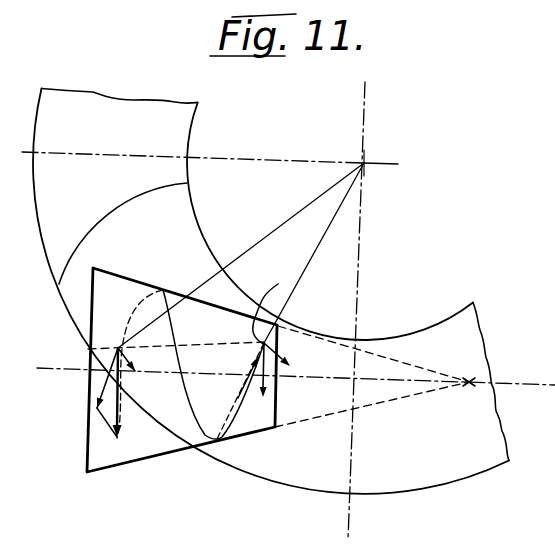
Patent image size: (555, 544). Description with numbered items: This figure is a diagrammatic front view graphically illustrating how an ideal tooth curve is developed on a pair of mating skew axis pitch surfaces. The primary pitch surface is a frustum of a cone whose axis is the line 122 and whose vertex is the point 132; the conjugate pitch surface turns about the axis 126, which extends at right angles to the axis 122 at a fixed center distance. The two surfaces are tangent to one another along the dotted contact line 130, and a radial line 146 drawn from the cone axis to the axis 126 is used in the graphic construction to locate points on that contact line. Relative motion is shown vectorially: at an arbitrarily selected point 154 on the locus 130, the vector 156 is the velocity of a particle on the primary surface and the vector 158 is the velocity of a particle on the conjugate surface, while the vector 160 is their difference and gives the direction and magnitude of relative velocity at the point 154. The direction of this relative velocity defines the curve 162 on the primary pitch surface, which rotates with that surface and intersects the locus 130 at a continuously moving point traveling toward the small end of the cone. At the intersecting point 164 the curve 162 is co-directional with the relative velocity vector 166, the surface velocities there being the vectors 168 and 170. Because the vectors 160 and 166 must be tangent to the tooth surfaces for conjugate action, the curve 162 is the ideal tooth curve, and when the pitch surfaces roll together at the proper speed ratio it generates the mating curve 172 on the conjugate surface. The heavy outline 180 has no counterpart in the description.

The axis of primary pitch surface 122 is at (43, 369).
The axis of conjugate pitch surface 126 is at (366, 166).
The contact line 130 is at (212, 348).
The vertex of the cone 132 is at (471, 380).
The radial line 146 is at (275, 229).
The point on the locus 154 is at (113, 345).
The velocity vector of primary surface 156 is at (97, 408).
The velocity vector of conjugate surface 158 is at (134, 368).
The relative velocity vector 160 is at (101, 395).
The ideal tooth curve 162 is at (178, 295).
The intersecting point 164 is at (258, 285).
The relative velocity vector 166 is at (254, 360).
The velocity vector 168 is at (266, 380).
The velocity vector 170 is at (282, 357).
The mating curve 172 is at (108, 206).
The cutter blade 180 is at (160, 443).